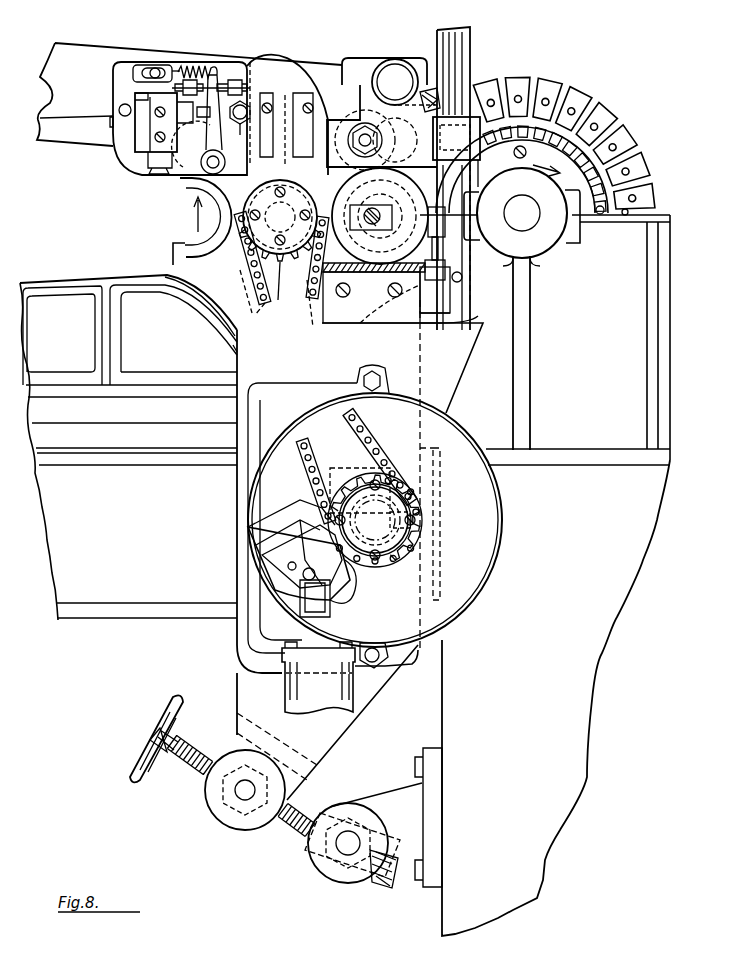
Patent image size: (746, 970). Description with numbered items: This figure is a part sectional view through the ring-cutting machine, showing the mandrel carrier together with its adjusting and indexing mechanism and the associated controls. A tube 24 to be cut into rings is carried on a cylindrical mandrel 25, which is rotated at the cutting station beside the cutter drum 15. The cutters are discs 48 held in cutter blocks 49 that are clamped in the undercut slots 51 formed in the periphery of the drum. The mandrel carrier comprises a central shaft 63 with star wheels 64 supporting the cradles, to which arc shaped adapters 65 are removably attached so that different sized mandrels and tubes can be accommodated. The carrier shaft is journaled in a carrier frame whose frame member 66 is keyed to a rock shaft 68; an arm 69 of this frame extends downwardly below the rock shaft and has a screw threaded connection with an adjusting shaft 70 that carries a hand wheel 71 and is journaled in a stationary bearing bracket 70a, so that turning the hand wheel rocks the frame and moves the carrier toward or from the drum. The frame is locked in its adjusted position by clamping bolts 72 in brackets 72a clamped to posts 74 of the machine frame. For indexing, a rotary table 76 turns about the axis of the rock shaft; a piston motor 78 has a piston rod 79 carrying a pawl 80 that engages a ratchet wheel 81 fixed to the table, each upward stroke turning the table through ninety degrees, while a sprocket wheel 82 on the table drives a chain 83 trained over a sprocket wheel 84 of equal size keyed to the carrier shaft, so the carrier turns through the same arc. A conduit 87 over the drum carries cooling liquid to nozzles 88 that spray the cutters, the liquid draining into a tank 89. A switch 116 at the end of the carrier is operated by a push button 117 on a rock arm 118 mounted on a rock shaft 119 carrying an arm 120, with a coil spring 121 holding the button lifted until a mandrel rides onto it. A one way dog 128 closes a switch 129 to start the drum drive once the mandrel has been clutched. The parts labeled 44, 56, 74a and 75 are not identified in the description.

The cutter drum 15 is at (500, 138).
The tube 24 is at (400, 200).
The cylindrical mandrel 25 is at (380, 217).
The hub shaft 44 is at (526, 222).
The cutter disc 48 is at (550, 88).
The cutter block 49 is at (594, 120).
The slot 51 is at (614, 220).
The rotor pad 56 is at (618, 148).
The carrier shaft 63 is at (199, 258).
The star wheel 64 is at (195, 272).
The arc shaped adapter 65 is at (185, 242).
The frame member 66 is at (228, 352).
The rock shaft 68 is at (414, 500).
The arm 69 is at (240, 688).
The adjusting shaft 70 is at (185, 775).
The stationary bearing bracket 70a is at (368, 812).
The hand wheel 71 is at (166, 708).
The clamping bolt 72 is at (380, 132).
The bracket 72a is at (365, 100).
The post 74 is at (468, 60).
The plate 74a is at (105, 45).
The vehicle body 75 is at (62, 262).
The rotary table 76 is at (498, 528).
The piston motor 78 is at (333, 699).
The piston rod 79 is at (332, 600).
The pawl 80 is at (288, 542).
The ratchet wheel 81 is at (318, 522).
The sprocket wheel 82 is at (362, 468).
The chain 83 is at (368, 432).
The sprocket wheel 84 is at (281, 253).
The conduit 87 is at (392, 70).
The nozzle 88 is at (455, 90).
The tank 89 is at (518, 645).
The switch 116 is at (152, 140).
The push button 117 is at (285, 129).
The rock arm 118 is at (175, 195).
The rock shaft 119 is at (208, 118).
The arm 120 is at (220, 115).
The coil spring 121 is at (190, 62).
The one way dog 128 is at (440, 228).
The switch 129 is at (428, 307).